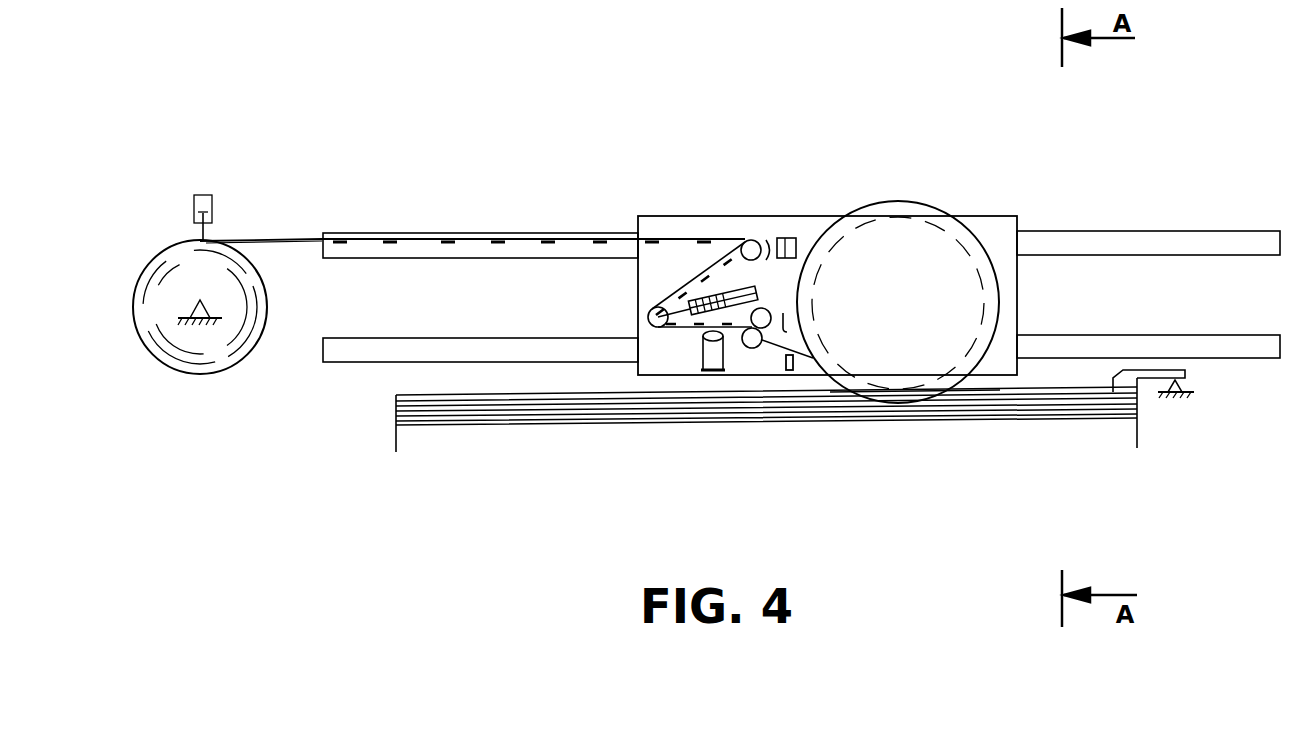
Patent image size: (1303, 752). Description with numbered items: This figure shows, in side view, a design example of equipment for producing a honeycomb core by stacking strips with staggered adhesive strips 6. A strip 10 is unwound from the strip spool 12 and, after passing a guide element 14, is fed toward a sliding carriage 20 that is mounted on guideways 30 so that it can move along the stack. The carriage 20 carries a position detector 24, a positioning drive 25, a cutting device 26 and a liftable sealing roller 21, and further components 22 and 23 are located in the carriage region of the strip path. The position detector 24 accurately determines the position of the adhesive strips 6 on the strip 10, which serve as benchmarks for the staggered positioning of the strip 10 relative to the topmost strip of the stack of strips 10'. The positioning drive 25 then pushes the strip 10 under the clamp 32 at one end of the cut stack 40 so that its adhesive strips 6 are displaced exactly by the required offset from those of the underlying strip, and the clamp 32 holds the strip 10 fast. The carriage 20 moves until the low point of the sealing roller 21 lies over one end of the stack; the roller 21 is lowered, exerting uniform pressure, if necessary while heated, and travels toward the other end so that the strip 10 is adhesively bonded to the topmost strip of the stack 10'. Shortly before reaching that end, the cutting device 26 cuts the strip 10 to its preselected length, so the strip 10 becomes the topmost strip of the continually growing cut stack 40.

The adhesive strips 6 is at (498, 238).
The strip 10 is at (649, 263).
The stack of strips 10' is at (915, 440).
The strip spool 12 is at (156, 268).
The guide 14 is at (203, 195).
The sliding carriage 20 is at (1000, 228).
The sealing roller 21 is at (901, 228).
The sensor 22 is at (786, 238).
The roller with cutter head 23 is at (700, 318).
The position detector 24 is at (713, 360).
The positioning drive 25 is at (752, 348).
The cutting device 26 is at (790, 372).
The guideways 30 is at (1262, 240).
The clamp 32 is at (1142, 372).
The cut stack 40 is at (572, 395).